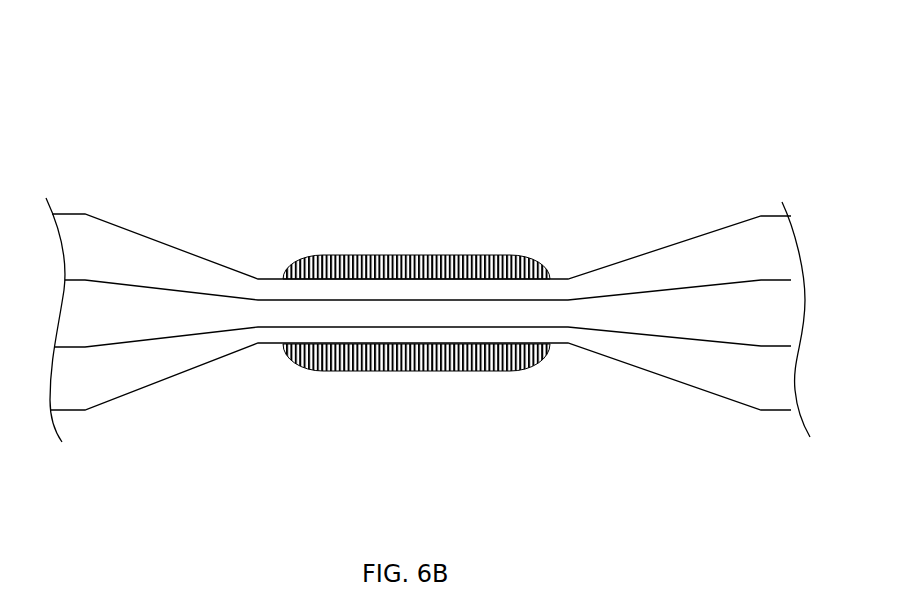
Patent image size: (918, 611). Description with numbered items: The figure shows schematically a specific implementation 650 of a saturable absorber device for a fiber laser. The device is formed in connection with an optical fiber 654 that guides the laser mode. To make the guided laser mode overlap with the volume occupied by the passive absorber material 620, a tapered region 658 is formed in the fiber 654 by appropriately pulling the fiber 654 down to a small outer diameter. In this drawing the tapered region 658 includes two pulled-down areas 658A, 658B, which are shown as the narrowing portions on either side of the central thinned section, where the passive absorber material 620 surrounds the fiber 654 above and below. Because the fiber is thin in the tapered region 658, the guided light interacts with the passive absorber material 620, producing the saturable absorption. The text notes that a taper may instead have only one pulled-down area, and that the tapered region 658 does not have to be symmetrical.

The saturable absorber implementation 650 is at (488, 96).
The passive absorber material 620 is at (325, 265).
The fiber 654 is at (773, 436).
The tapered region 658 is at (755, 436).
The pulled-down area 658A is at (276, 202).
The pulled-down area 658B is at (758, 200).